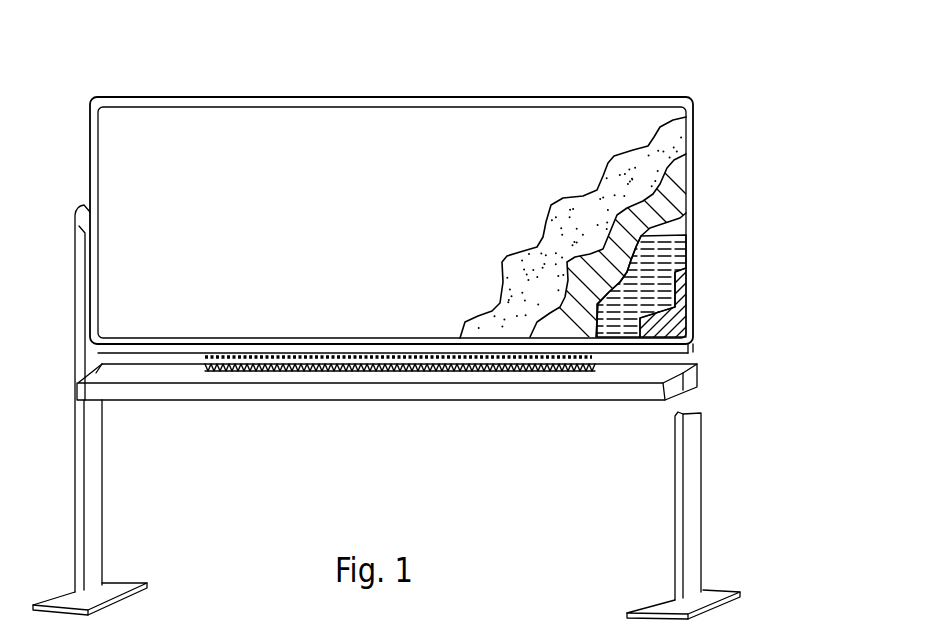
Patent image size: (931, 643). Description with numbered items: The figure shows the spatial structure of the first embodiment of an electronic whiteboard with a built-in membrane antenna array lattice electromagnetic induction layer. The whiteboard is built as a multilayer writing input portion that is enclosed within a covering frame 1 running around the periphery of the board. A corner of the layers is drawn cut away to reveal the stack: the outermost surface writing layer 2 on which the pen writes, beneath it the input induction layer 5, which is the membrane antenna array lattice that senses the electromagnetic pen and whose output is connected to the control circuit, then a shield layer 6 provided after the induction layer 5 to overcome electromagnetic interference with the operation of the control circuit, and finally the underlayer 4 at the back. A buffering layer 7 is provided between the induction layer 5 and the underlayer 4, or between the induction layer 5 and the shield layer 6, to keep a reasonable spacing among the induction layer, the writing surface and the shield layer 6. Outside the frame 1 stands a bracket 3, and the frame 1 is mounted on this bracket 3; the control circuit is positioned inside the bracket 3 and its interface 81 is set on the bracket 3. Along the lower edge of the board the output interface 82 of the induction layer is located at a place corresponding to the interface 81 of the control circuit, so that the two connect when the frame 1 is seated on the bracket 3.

The covering frame 1 is at (597, 98).
The surface writing layer 2 is at (432, 125).
The bracket 3 is at (695, 518).
The underlayer 4 is at (695, 320).
The input induction layer 5 is at (695, 115).
The shield layer 6 is at (695, 210).
The buffering layer 7 is at (695, 163).
The interface of the control circuit 81 is at (485, 357).
The output interface of the induction layer 82 is at (540, 364).